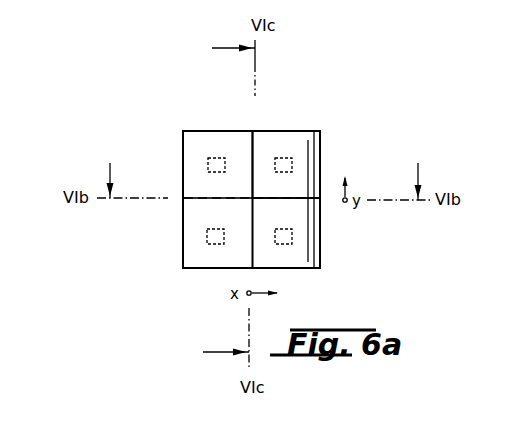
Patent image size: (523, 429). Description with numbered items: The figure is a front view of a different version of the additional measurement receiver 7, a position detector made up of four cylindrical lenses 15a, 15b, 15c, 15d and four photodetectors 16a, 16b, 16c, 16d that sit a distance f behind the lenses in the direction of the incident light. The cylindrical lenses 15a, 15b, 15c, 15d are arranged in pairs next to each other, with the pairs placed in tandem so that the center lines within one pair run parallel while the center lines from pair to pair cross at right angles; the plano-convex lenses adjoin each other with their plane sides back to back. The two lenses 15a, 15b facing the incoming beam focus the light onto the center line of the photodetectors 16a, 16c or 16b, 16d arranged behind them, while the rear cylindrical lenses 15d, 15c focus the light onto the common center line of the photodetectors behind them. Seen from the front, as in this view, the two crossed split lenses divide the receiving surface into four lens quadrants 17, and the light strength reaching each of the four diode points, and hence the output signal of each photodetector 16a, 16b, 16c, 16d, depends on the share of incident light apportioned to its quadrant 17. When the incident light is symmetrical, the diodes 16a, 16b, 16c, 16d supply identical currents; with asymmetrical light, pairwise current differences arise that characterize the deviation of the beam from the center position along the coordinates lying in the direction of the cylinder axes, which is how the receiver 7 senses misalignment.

The additional measurement receiver 7 is at (306, 72).
The cylindrical lens 15a is at (198, 141).
The cylindrical lens 15b is at (306, 164).
The cylindrical lens 15c is at (324, 158).
The cylindrical lens 15d is at (298, 253).
The photodetector 16a is at (228, 158).
The photodetector 16b is at (278, 159).
The photodetector 16c is at (207, 238).
The photodetector 16d is at (292, 237).
The lens quadrants 17 is at (251, 199).